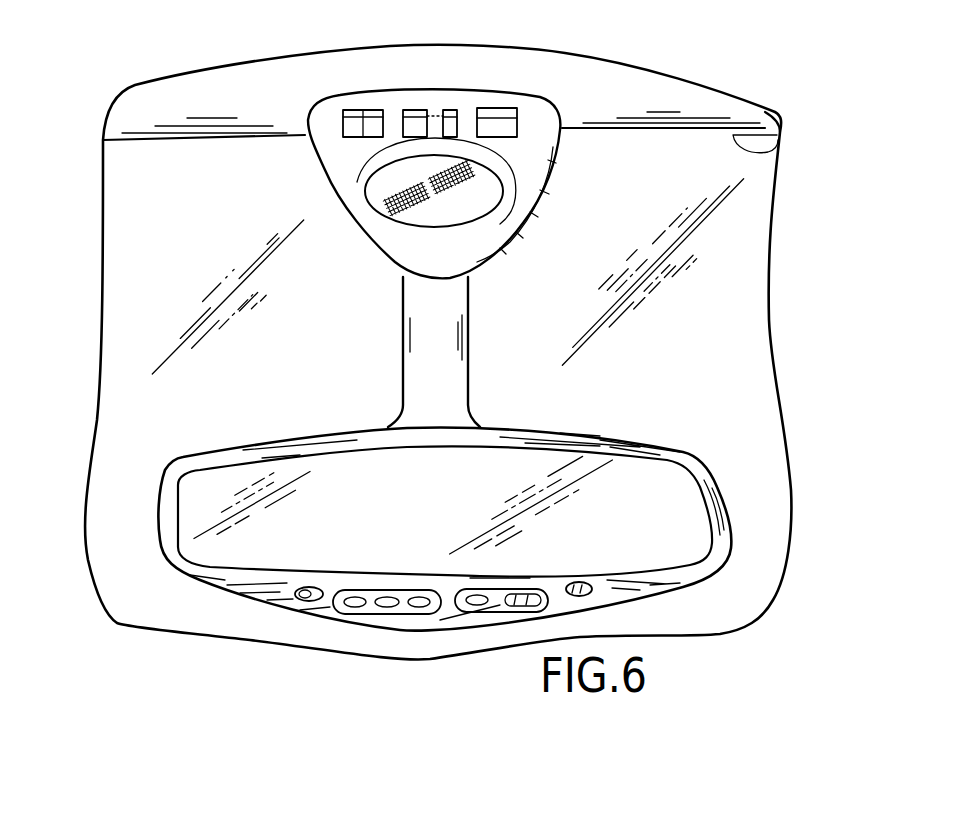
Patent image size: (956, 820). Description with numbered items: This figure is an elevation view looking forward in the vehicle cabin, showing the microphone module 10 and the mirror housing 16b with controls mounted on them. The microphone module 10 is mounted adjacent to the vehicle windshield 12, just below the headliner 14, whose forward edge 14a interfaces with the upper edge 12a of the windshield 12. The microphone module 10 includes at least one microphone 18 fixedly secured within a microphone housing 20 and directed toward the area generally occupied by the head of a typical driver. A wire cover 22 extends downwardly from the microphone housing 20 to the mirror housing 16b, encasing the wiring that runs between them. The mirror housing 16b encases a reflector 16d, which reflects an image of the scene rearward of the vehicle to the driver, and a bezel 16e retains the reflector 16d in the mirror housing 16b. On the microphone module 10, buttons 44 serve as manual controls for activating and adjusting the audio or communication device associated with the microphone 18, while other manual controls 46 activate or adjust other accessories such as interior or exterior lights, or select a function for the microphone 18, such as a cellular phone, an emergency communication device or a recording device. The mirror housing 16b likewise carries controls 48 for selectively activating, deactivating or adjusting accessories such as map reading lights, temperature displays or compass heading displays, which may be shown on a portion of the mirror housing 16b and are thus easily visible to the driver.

The microphone module 10 is at (290, 167).
The vehicle windshield 12 is at (743, 265).
The upper edge of windshield 12a is at (777, 152).
The headliner 14 is at (663, 87).
The forward edge of headliner 14a is at (777, 112).
The mirror housing 16b is at (672, 453).
The reflector 16d is at (237, 482).
The bezel 16e is at (178, 510).
The microphone 18 is at (445, 208).
The microphone housing 20 is at (520, 227).
The wire cover 22 is at (450, 338).
The buttons 44 is at (353, 140).
The manual controls 46 is at (455, 110).
The controls 48 is at (404, 565).